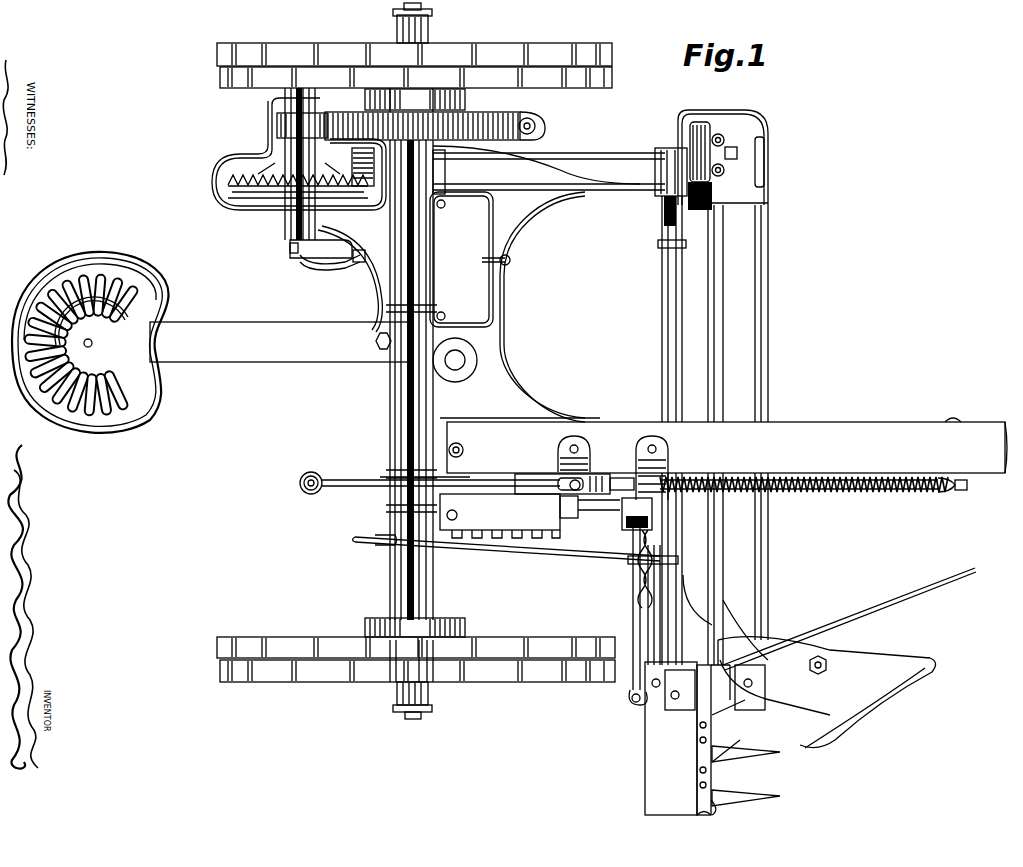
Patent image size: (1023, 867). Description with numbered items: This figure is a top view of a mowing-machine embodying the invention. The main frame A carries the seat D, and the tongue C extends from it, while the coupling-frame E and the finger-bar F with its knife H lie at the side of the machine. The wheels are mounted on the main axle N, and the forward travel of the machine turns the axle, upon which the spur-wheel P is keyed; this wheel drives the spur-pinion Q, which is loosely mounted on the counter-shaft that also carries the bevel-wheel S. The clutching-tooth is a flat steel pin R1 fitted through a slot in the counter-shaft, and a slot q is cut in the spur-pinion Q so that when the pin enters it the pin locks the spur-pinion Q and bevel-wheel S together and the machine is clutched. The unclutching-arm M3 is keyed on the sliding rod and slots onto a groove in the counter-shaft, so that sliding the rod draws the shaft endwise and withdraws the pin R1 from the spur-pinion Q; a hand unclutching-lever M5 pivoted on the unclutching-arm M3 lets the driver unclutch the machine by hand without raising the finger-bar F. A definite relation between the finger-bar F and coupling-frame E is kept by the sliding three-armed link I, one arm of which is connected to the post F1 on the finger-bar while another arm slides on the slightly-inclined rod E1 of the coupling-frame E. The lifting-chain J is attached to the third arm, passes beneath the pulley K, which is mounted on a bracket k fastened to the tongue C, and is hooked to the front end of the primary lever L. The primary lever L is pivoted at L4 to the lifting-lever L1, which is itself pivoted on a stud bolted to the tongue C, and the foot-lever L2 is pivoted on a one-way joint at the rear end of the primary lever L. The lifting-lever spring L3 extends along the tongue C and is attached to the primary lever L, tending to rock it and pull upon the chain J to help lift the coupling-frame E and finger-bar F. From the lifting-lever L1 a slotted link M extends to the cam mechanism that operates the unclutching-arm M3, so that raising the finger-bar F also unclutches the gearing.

The spur-wheel P is at (362, 116).
The spur-pinion Q is at (277, 129).
The flat steel pin R1 is at (262, 164).
The slot q is at (352, 170).
The bevel-wheel S is at (272, 198).
The unclutching-arm M3 is at (316, 260).
The hand unclutching-lever M5 is at (340, 266).
The seat D is at (212, 342).
The main frame A is at (406, 414).
The foot-lever L2 is at (311, 472).
The pivot of primary lever L4 is at (590, 438).
The coupling-frame E is at (662, 360).
The primary lever L is at (612, 484).
The bracket k is at (650, 470).
The tongue C is at (727, 445).
The lifting-lever spring L3 is at (816, 492).
The link M is at (492, 508).
The lifting-lever L1 is at (566, 518).
The pulley K is at (628, 522).
The lifting-chain J is at (632, 560).
The inclined rod E1 is at (633, 588).
The sliding three-armed link I is at (648, 614).
The post F1 is at (636, 706).
The finger-bar F is at (705, 738).
The knife H is at (725, 795).
The main axle N is at (416, 709).